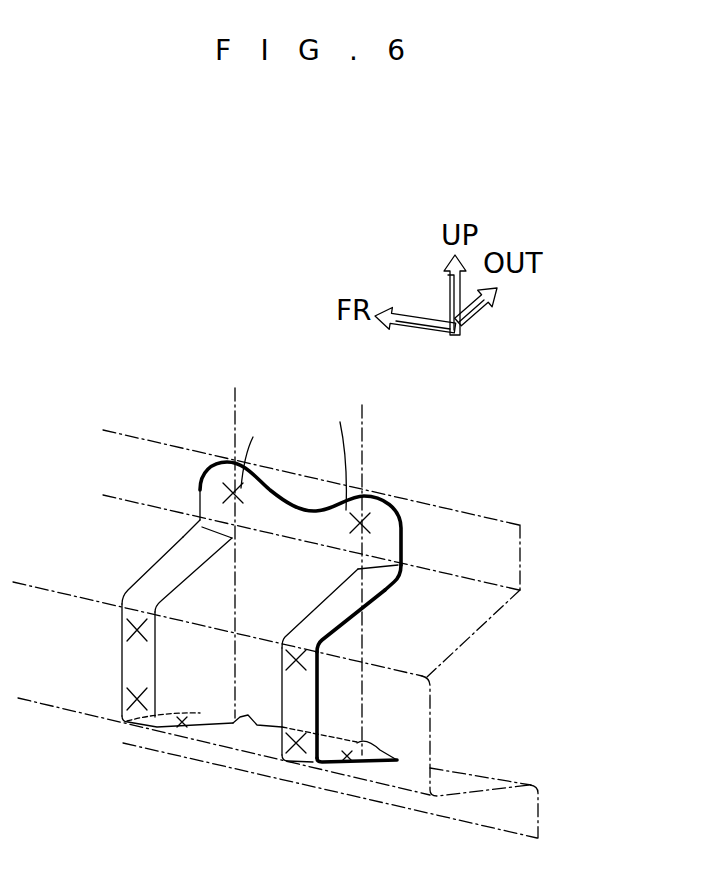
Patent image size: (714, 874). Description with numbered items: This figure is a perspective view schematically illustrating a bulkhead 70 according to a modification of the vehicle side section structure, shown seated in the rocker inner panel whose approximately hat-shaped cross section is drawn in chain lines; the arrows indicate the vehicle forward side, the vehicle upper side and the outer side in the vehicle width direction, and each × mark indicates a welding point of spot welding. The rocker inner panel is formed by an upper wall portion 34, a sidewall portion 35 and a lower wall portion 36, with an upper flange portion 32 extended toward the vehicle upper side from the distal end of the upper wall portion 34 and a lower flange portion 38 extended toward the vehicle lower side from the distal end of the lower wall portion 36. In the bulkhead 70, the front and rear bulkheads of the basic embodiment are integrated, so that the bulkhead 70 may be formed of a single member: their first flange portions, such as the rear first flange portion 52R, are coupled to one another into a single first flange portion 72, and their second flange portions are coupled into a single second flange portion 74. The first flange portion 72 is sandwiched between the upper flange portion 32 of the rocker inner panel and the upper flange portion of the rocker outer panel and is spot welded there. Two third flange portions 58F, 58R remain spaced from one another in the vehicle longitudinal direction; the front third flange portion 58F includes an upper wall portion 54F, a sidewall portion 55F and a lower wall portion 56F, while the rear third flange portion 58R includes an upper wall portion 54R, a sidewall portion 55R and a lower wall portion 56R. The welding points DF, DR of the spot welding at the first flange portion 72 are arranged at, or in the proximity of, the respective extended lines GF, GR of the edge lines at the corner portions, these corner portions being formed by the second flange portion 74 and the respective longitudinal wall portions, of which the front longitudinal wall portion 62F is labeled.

The bulkhead 70 is at (265, 628).
The first flange portion 72 is at (298, 525).
The second flange portion 74 is at (262, 735).
The upper flange portion 32 is at (522, 568).
The upper wall portion 34 is at (470, 640).
The sidewall portion 35 is at (432, 732).
The lower wall portion 36 is at (488, 792).
The lower flange portion 38 is at (540, 802).
The first flange portion 52R is at (345, 645).
The upper wall portion 54F is at (164, 566).
The upper wall portion 54R is at (345, 603).
The sidewall portion 55F is at (137, 656).
The sidewall portion 55R is at (303, 695).
The lower wall portion 56F is at (157, 730).
The lower wall portion 56R is at (380, 765).
The third flange portion 58F is at (176, 540).
The third flange portion 58R is at (393, 593).
The longitudinal wall portion 62F is at (218, 617).
The extended line GF is at (242, 398).
The extended line GR is at (364, 445).
The welding point DF is at (267, 447).
The welding point DR is at (333, 453).